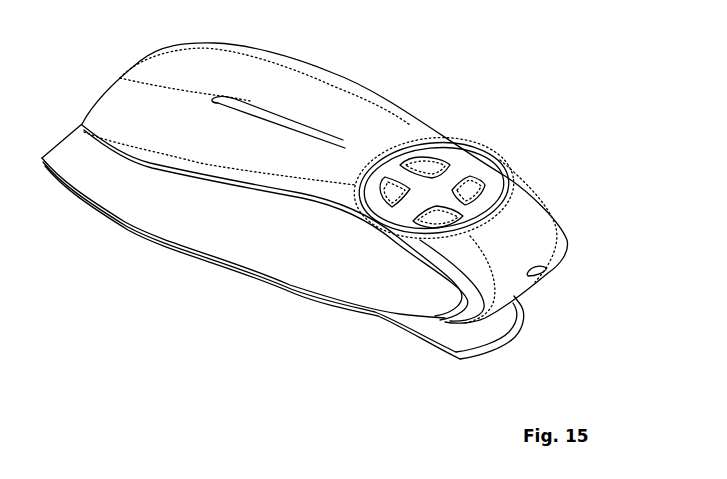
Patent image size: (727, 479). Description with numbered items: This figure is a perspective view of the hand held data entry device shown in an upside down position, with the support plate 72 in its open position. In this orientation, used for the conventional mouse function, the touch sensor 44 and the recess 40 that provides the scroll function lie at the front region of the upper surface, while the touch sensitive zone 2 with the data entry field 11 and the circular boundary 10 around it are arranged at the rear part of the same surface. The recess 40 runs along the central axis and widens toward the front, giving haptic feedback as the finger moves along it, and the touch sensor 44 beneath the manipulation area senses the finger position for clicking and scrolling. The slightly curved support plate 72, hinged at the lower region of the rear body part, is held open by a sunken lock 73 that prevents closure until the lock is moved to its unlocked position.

The touch sensitive zone 2 is at (413, 134).
The recess 40 is at (240, 100).
The circular boundary 10 is at (508, 182).
The data entry field 11 is at (460, 171).
The touch sensor 44 is at (168, 140).
The support plate 72 is at (524, 330).
The sunken lock 73 is at (547, 270).